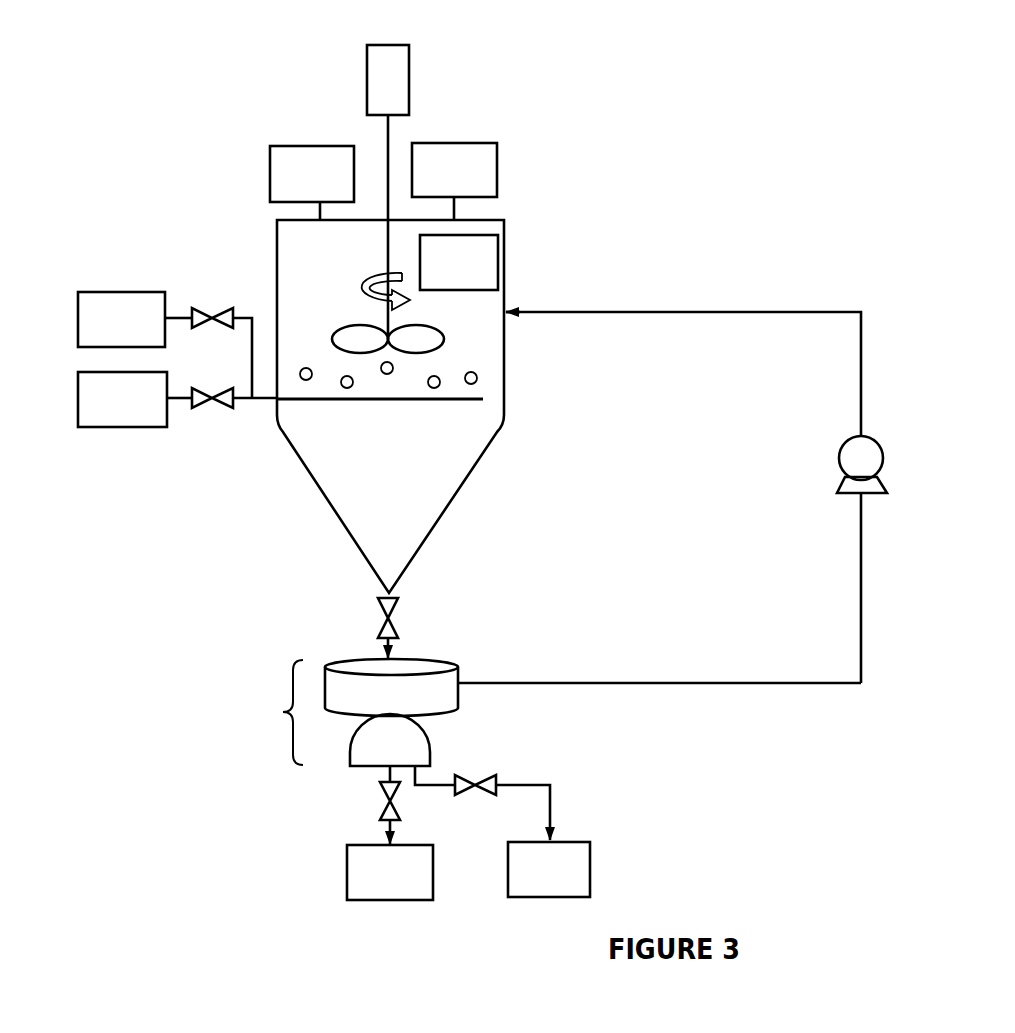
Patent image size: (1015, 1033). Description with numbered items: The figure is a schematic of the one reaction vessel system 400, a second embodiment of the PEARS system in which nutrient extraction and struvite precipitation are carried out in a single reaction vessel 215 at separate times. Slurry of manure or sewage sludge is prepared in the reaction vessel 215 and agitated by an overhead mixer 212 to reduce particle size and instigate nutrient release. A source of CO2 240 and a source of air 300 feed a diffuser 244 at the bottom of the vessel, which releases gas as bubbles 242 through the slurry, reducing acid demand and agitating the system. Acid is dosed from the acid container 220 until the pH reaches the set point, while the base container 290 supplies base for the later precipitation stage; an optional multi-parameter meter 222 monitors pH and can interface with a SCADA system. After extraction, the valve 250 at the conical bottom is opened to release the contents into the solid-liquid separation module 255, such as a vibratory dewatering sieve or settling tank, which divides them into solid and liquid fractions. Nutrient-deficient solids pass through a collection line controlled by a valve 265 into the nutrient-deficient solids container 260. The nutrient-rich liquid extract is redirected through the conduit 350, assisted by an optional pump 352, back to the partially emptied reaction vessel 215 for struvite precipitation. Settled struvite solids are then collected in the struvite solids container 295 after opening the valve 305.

The one reaction vessel system 400 is at (218, 195).
The mixer 212 is at (416, 77).
The acid container 220 is at (312, 183).
The base container 290 is at (454, 181).
The multi-parameter meter 222 is at (459, 262).
The reaction vessel 215 is at (457, 460).
The source of air 300 is at (165, 345).
The source of CO2 240 is at (177, 399).
The diffuser 244 is at (332, 402).
The bubbles 242 is at (481, 381).
The valve 250 is at (378, 612).
The conduit 350 is at (839, 283).
The pump 352 is at (903, 432).
The solid-liquid separation module 255 is at (330, 712).
The valve 265 is at (372, 800).
The nutrient-deficient solids container 260 is at (390, 872).
The valve 305 is at (495, 768).
The struvite solids container 295 is at (549, 869).